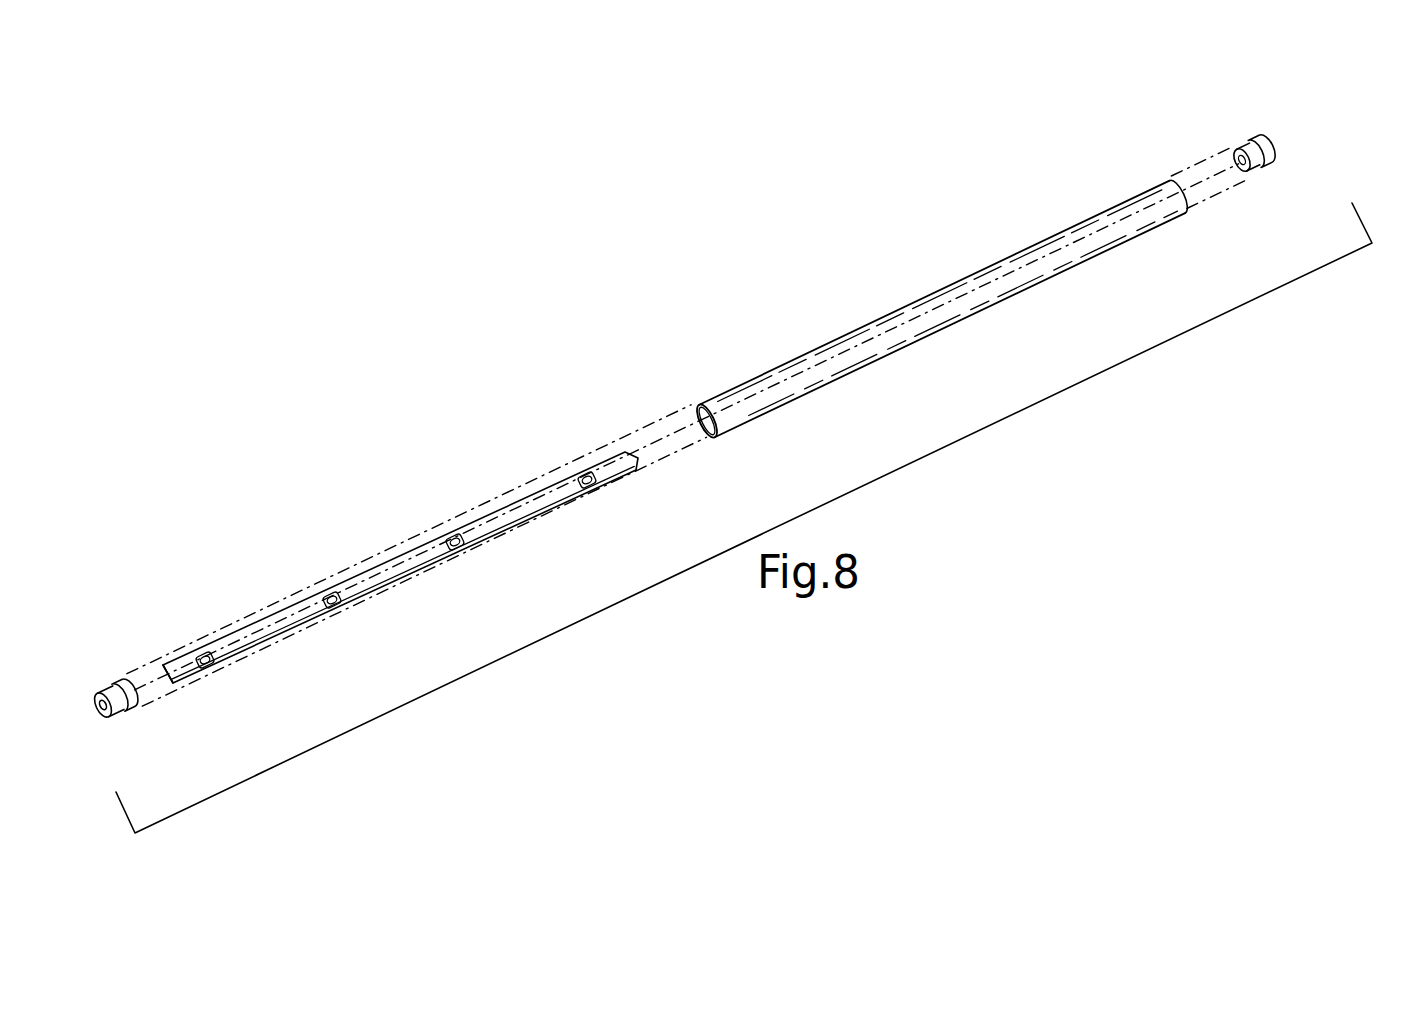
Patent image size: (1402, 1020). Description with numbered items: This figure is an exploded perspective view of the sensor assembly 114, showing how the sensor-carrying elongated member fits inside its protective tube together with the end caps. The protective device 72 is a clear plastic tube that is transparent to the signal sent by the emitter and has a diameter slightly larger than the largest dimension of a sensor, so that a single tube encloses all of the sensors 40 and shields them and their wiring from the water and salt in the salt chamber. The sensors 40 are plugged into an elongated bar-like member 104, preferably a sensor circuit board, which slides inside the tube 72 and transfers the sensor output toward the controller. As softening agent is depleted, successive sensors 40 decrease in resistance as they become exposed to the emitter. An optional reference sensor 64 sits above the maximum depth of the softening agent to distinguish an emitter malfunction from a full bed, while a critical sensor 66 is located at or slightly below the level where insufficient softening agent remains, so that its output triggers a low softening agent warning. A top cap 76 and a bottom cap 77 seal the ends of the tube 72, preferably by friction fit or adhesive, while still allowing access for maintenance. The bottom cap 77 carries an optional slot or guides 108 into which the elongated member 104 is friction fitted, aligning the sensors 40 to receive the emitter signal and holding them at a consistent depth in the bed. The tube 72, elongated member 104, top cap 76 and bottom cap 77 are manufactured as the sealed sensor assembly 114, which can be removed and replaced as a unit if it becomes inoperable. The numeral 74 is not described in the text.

The sensors 40 is at (593, 485).
The reference sensor 64 is at (614, 458).
The critical sensor 66 is at (157, 663).
The protective device 72 is at (802, 377).
The tube section 74 is at (1082, 233).
The top cap 76 is at (1240, 148).
The bottom cap 77 is at (120, 717).
The elongated bar-like member 104 is at (372, 580).
The slot or guides 108 is at (1243, 180).
The sensor assembly 114 is at (965, 458).